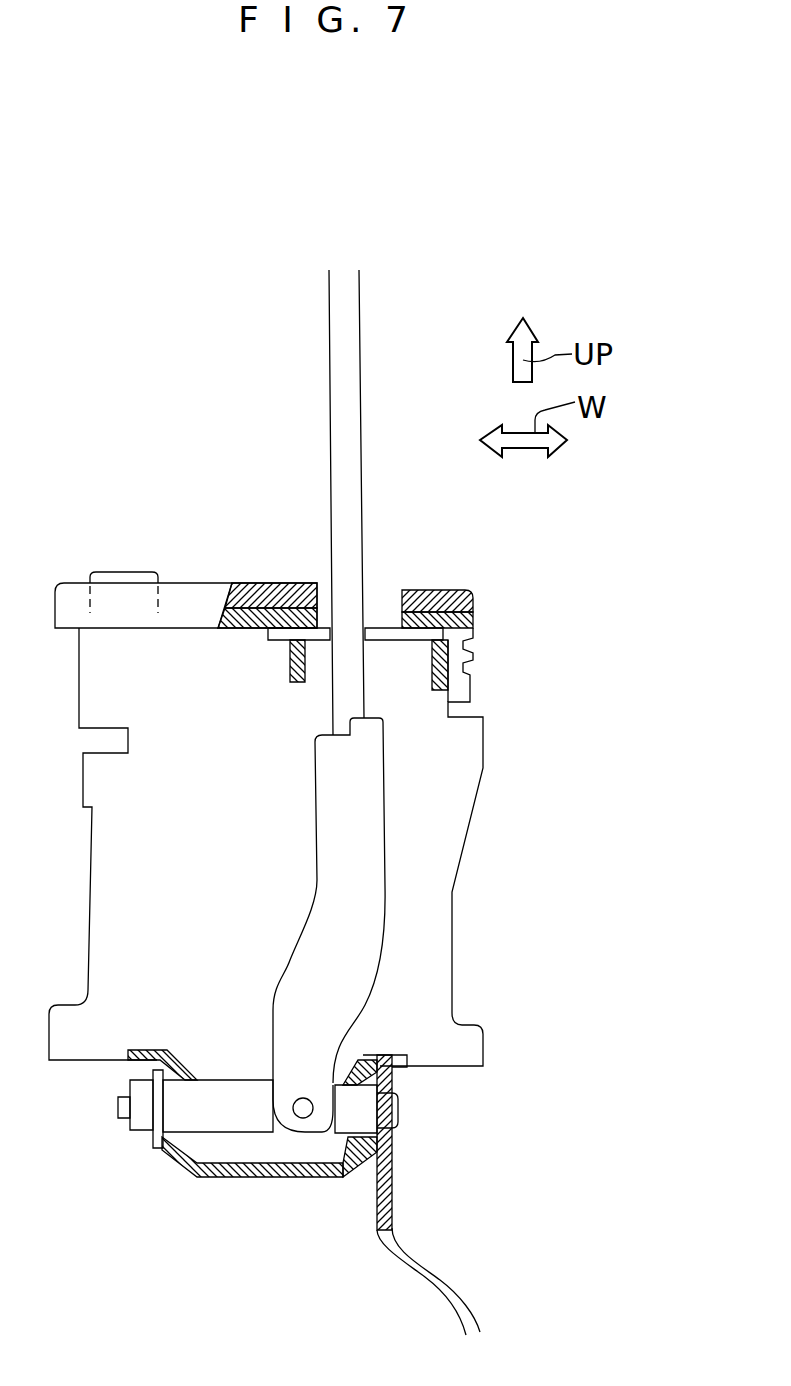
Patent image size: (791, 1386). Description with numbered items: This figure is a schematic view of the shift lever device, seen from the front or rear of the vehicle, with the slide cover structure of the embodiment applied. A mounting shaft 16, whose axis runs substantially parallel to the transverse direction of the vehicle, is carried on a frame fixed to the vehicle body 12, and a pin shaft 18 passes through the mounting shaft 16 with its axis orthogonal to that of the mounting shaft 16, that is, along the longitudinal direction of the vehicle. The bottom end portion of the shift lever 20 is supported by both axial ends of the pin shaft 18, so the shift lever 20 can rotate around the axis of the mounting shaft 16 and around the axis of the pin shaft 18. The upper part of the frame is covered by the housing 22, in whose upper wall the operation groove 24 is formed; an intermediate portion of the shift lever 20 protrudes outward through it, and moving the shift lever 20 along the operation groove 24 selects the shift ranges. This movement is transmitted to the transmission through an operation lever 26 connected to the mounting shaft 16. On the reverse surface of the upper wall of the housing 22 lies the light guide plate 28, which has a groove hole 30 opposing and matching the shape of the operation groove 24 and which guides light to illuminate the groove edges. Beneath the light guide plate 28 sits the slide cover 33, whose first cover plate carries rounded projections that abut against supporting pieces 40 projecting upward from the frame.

The vehicle body 12 is at (455, 948).
The mounting shaft 16 is at (230, 1117).
The pin shaft 18 is at (303, 1118).
The shift lever 20 is at (357, 482).
The housing 22 is at (298, 583).
The operation groove 24 is at (402, 590).
The operation lever 26 is at (440, 1270).
The light guide plate 28 is at (250, 583).
The groove hole 30 is at (400, 622).
The slide cover 33 is at (395, 642).
The supporting pieces 40 is at (292, 660).